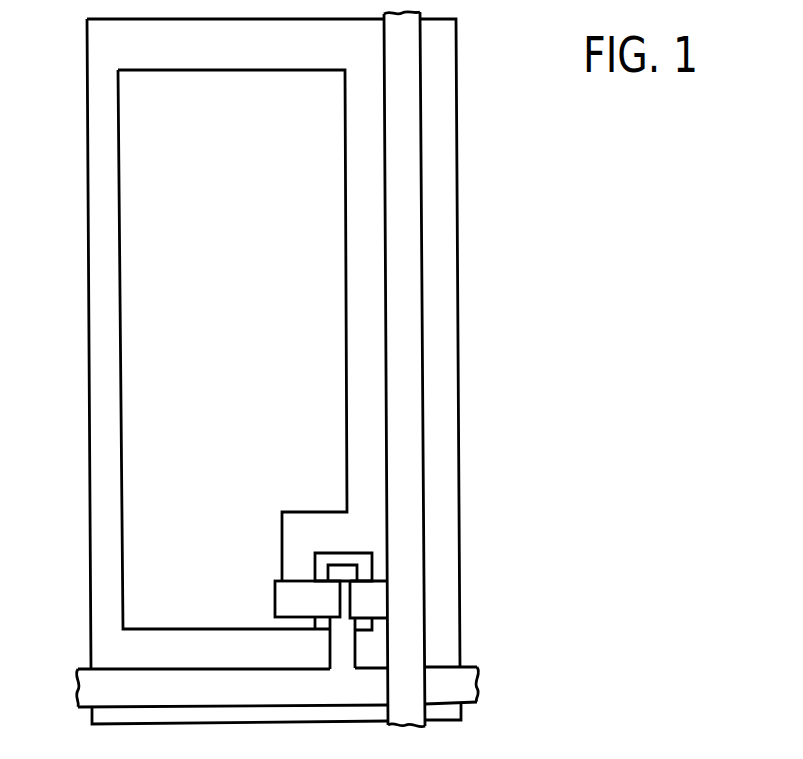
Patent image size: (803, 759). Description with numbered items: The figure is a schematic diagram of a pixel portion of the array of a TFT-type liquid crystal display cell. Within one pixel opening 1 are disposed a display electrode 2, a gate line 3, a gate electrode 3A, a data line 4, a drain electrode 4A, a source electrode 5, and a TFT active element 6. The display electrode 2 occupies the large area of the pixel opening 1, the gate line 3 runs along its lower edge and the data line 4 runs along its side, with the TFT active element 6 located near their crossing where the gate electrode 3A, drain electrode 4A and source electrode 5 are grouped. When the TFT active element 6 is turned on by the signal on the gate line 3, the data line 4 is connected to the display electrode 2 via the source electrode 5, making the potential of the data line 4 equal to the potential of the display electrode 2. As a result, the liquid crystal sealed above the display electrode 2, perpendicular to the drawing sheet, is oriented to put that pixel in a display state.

The pixel opening 1 is at (167, 125).
The display electrode 2 is at (137, 349).
The gate line 3 is at (462, 685).
The gate electrode 3A is at (328, 648).
The data line 4 is at (412, 358).
The drain electrode 4A is at (385, 578).
The source electrode 5 is at (284, 594).
The TFT active element 6 is at (328, 553).